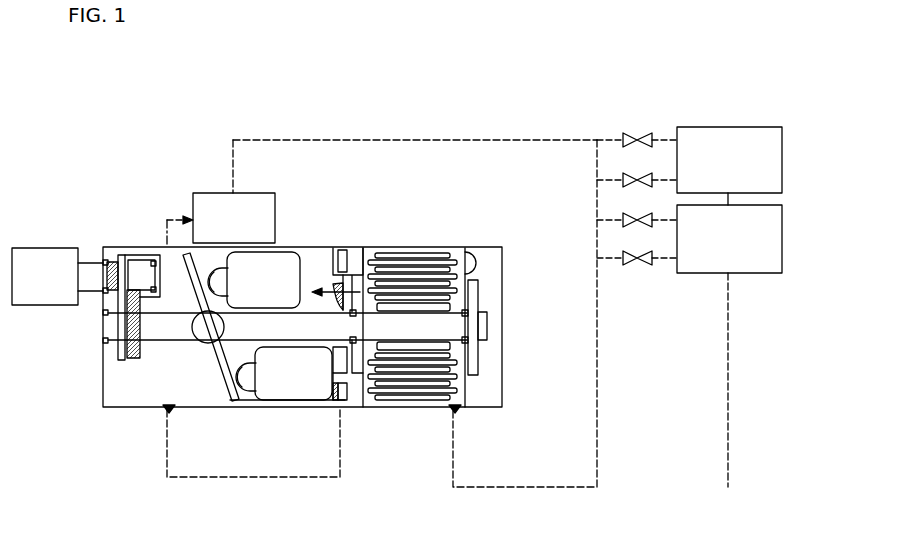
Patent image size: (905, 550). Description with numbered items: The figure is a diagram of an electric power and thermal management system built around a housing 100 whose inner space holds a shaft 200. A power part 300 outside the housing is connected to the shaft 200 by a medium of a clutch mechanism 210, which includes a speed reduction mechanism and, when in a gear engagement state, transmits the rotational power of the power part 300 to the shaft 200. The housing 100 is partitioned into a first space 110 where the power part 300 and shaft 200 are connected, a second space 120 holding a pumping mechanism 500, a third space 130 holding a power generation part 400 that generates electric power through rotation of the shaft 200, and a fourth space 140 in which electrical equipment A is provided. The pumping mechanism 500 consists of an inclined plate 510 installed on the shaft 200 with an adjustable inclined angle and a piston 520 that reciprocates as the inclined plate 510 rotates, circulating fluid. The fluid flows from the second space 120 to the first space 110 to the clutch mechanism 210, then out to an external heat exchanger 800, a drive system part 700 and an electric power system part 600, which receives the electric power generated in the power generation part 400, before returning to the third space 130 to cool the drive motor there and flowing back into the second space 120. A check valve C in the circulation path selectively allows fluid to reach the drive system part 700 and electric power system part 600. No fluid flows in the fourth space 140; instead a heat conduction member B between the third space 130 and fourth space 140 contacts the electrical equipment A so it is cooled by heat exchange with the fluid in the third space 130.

The housing 100 is at (420, 413).
The first space 110 is at (144, 425).
The second space 120 is at (318, 262).
The third space 130 is at (358, 352).
The fourth space 140 is at (492, 262).
The shaft 200 is at (288, 330).
The clutch mechanism 210 is at (120, 362).
The power part 300 is at (44, 302).
The power generation part 400 is at (397, 268).
The pumping mechanism 500 is at (295, 96).
The inclined plate 510 is at (232, 248).
The piston 520 is at (266, 250).
The electric power system part 600 is at (750, 130).
The drive system part 700 is at (752, 262).
The external heat exchanger 800 is at (193, 200).
The electrical equipment A is at (487, 327).
The heat conduction member B is at (472, 257).
The check valve C is at (648, 178).